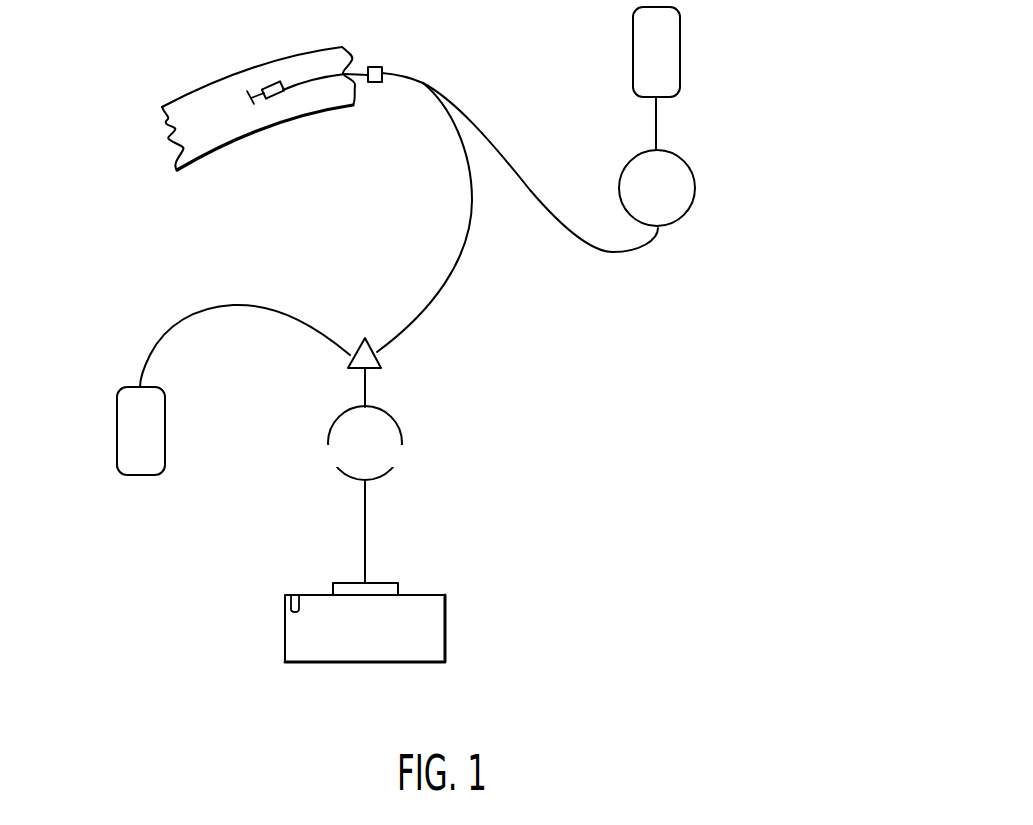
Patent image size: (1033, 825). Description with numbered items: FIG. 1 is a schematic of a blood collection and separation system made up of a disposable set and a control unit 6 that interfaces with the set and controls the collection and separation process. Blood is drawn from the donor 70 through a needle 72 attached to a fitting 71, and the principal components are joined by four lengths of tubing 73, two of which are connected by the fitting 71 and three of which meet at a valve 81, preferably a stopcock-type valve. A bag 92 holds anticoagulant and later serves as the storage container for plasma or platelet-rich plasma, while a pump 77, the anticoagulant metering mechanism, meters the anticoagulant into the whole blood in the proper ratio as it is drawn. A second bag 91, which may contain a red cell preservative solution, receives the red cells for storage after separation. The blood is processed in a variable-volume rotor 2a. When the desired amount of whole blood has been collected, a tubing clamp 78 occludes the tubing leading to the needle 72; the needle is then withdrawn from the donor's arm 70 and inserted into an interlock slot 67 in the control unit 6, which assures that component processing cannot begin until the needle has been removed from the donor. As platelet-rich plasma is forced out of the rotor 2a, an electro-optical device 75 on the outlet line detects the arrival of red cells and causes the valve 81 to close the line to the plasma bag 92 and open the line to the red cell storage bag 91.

The donor 70 is at (250, 67).
The fitting 71 is at (275, 99).
The needle 72 is at (252, 100).
The tubing 73 is at (500, 147).
The tubing clamp 78 is at (375, 82).
The anticoagulant / plasma storage bag 92 is at (633, 43).
The pump 77 is at (624, 177).
The valve 81 is at (349, 372).
The electro-optical device 75 is at (350, 481).
The red cell storage bag 91 is at (165, 437).
The variable-volume rotor 2a is at (397, 585).
The control unit 6 is at (285, 632).
The interlock slot 67 is at (292, 605).